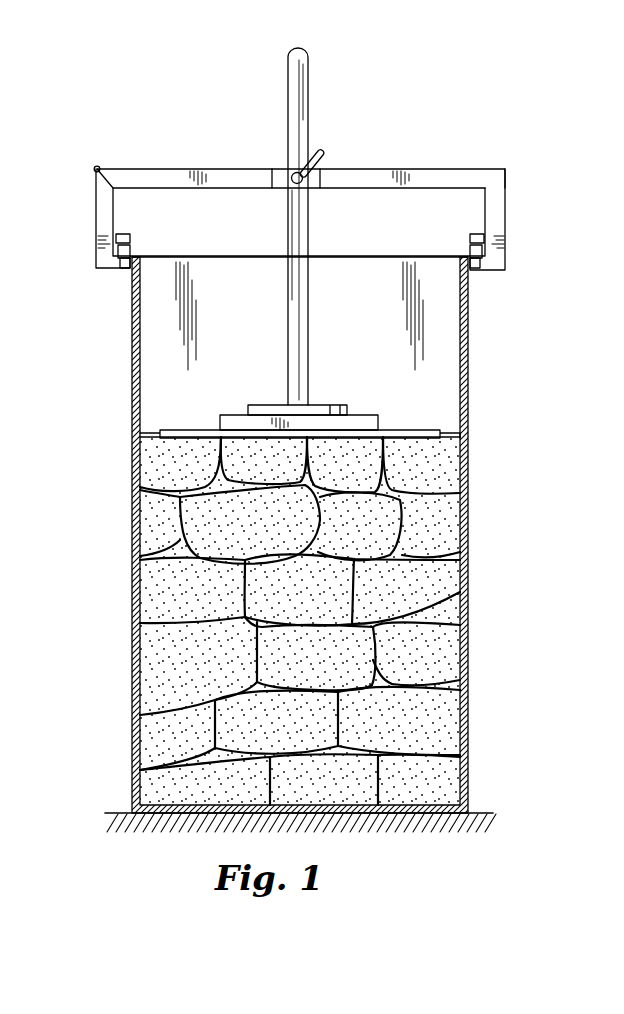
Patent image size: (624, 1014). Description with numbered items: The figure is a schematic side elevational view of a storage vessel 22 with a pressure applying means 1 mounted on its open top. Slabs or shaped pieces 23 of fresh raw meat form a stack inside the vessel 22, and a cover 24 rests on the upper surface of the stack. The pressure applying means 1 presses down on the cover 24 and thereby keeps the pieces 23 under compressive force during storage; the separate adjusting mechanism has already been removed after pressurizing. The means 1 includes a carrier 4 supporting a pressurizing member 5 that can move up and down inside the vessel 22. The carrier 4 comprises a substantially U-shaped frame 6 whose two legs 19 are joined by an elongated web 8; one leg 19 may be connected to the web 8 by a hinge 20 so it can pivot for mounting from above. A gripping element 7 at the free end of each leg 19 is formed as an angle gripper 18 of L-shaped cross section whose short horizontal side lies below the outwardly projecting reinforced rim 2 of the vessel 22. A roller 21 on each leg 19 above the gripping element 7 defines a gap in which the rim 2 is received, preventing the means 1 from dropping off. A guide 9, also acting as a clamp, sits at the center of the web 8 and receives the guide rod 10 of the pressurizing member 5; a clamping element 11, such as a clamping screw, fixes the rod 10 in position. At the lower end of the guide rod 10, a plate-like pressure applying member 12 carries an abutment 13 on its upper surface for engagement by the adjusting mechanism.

The pressure applying means 1 is at (495, 140).
The reinforced rim 2 is at (477, 263).
The carrier 4 is at (512, 164).
The pressurizing member 5 is at (314, 330).
The U-shaped frame 6 is at (412, 166).
The gripping element 7 is at (131, 249).
The web 8 is at (245, 176).
The guide 9 is at (320, 174).
The guide rod 10 is at (300, 84).
The clamping element 11 is at (319, 150).
The pressure applying member 12 is at (238, 415).
The abutment 13 is at (270, 406).
The angle gripper 18 is at (121, 264).
The leg 19 is at (103, 221).
The hinge 20 is at (94, 169).
The roller 21 is at (125, 236).
The vessel 22 is at (476, 491).
The pieces 23 is at (317, 587).
The cover 24 is at (414, 432).